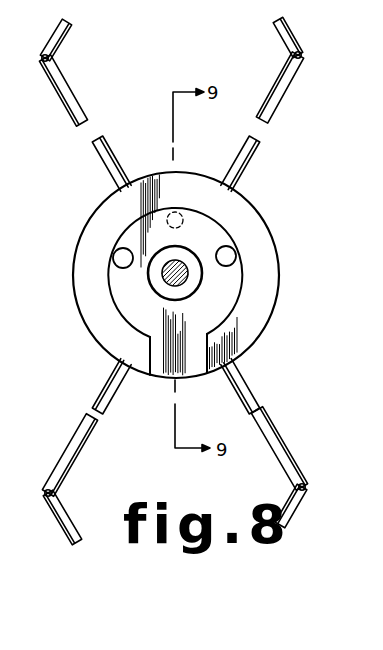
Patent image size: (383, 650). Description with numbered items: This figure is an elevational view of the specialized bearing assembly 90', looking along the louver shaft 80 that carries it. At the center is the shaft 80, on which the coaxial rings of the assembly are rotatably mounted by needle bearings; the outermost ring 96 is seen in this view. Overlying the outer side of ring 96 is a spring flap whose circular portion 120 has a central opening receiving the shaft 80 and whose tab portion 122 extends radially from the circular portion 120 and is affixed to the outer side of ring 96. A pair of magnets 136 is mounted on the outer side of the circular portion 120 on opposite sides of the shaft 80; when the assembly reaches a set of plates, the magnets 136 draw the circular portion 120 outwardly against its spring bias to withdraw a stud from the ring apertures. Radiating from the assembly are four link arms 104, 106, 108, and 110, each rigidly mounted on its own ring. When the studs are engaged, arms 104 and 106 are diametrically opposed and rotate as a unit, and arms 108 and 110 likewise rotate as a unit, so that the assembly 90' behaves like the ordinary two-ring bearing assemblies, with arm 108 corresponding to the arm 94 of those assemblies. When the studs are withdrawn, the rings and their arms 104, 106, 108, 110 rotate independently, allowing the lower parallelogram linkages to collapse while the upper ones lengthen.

The shaft 80 is at (190, 277).
The specialized bearing assembly 90' is at (151, 275).
The arm 94 is at (54, 28).
The ring 96 is at (245, 332).
The link arm 104 is at (286, 92).
The link arm 106 is at (68, 452).
The link arm 108 is at (70, 80).
The link arm 110 is at (280, 433).
The circular portion 120 is at (213, 228).
The tab portion 122 is at (162, 360).
The magnets 136 is at (120, 257).